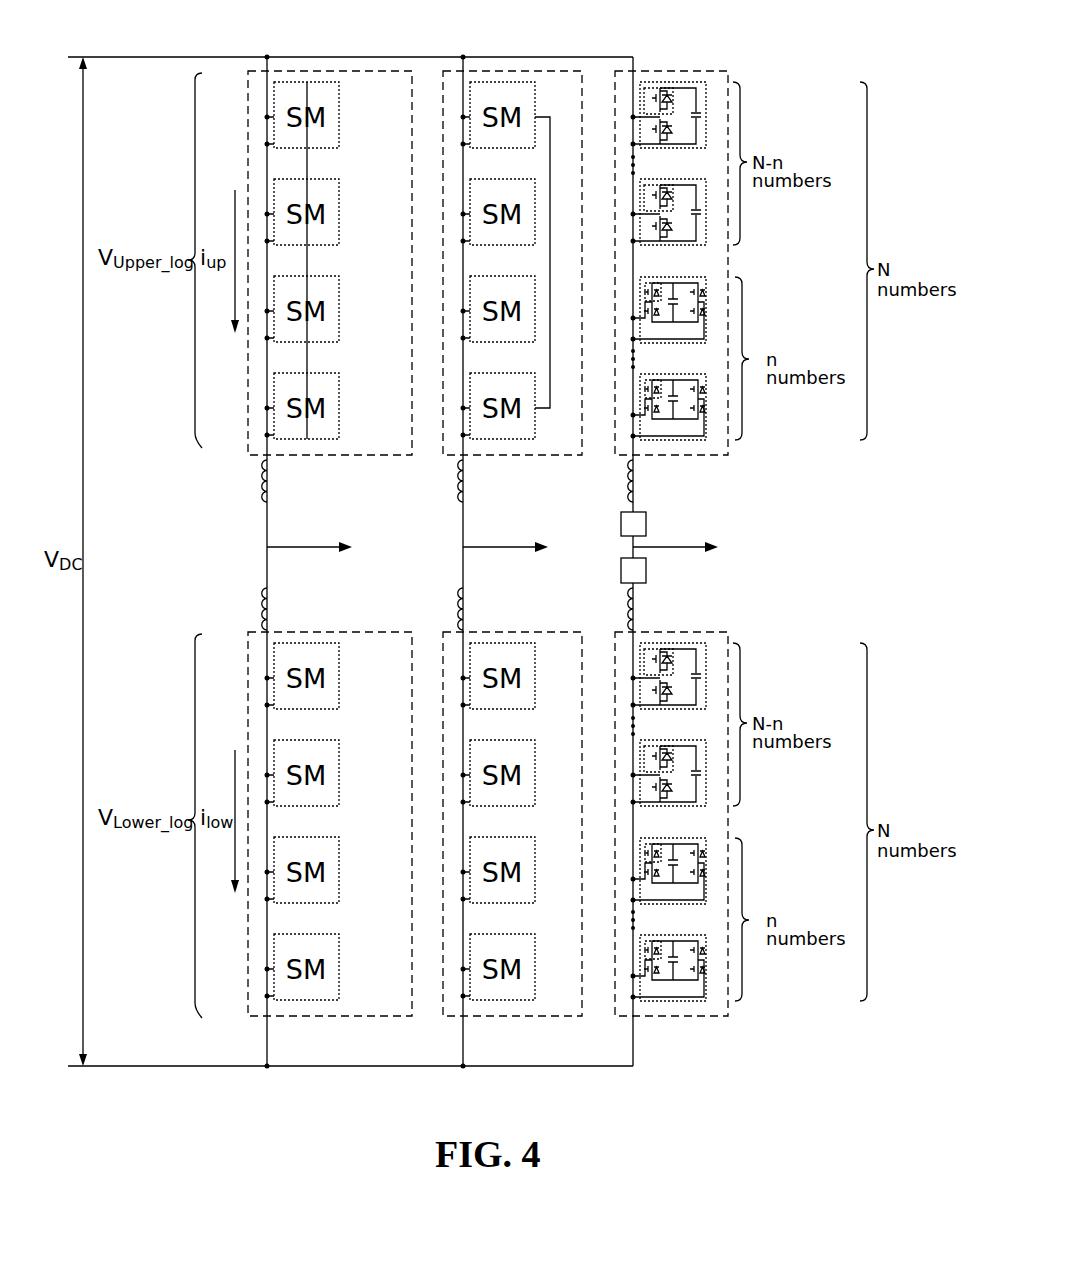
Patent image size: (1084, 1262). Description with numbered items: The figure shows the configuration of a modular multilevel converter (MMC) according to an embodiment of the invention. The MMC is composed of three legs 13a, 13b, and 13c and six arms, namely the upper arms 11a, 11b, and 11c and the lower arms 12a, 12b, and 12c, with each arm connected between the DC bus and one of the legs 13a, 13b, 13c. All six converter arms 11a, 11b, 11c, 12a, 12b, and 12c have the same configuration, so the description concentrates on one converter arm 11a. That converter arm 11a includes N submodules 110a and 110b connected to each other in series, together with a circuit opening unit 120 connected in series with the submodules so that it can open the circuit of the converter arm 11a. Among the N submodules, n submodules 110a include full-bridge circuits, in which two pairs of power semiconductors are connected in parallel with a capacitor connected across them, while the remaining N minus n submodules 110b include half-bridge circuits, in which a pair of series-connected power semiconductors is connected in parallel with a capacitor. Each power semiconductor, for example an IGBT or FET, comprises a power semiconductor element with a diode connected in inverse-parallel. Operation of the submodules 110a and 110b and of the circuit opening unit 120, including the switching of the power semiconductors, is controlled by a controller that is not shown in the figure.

The upper arm 11a is at (300, 70).
The upper arm 11b is at (497, 70).
The upper arm 11c is at (668, 70).
The lower arm 12a is at (300, 1018).
The lower arm 12b is at (497, 1018).
The lower arm 12c is at (668, 1018).
The leg 13a is at (309, 549).
The leg 13b is at (505, 549).
The leg 13c is at (675, 549).
The submodule including full-bridge circuit 110a is at (703, 372).
The submodule including half-bridge circuit 110b is at (703, 177).
The circuit opening unit 120 is at (647, 521).